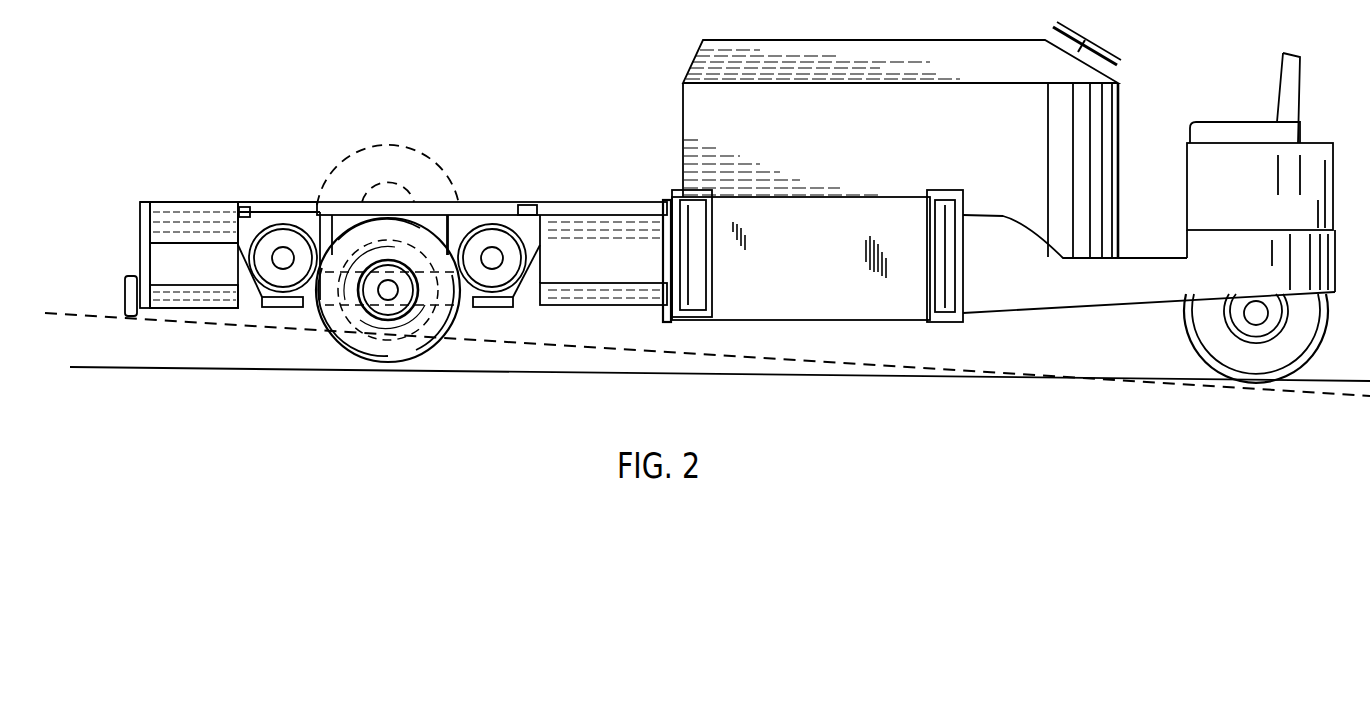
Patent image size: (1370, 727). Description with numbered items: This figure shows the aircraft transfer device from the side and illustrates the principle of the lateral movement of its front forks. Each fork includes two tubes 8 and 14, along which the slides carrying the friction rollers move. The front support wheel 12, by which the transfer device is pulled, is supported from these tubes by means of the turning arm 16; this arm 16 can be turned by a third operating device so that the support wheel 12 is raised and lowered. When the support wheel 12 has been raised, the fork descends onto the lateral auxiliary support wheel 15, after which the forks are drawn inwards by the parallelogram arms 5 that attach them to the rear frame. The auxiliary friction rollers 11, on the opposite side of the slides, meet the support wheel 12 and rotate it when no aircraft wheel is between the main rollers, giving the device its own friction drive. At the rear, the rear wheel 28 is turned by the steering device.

The parallelogram arms 5 is at (877, 322).
The tube 8 is at (205, 226).
The auxiliary friction rollers 11 is at (283, 237).
The front support wheel 12 is at (400, 346).
The tube 14 is at (225, 296).
The lateral auxiliary support wheel 15 is at (134, 312).
The turning arm 16 is at (343, 272).
The rear wheel 28 is at (1250, 358).